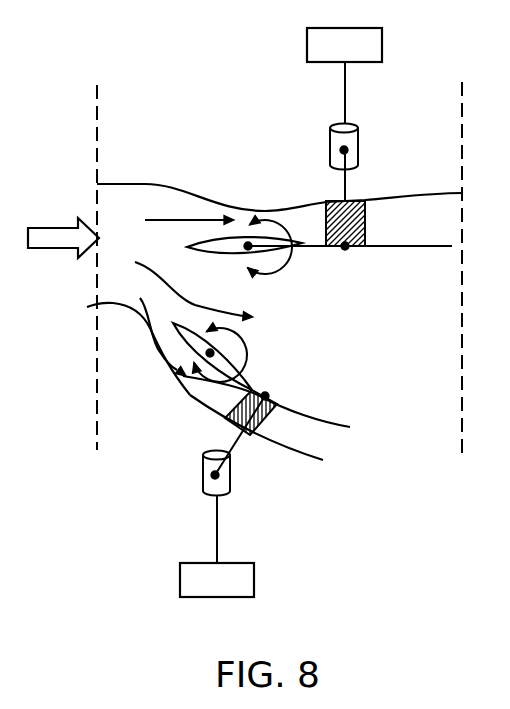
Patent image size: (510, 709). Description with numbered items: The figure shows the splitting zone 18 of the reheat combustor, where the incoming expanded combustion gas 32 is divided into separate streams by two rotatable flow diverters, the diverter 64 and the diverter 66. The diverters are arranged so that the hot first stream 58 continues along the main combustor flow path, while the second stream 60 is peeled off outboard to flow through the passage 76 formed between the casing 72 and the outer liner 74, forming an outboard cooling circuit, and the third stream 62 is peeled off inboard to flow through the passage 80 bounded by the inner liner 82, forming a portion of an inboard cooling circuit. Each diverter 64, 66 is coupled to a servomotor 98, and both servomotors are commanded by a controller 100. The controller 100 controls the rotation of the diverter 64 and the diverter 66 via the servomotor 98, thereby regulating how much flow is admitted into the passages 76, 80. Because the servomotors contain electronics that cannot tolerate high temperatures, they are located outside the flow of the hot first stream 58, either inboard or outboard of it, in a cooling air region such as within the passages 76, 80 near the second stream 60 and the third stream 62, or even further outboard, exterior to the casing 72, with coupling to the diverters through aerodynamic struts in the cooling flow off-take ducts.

The splitting zone 18 is at (134, 58).
The expanded combustion gas 32 is at (47, 226).
The first stream 58 is at (212, 303).
The second stream 60 is at (163, 220).
The third stream 62 is at (152, 308).
The diverter 64 is at (217, 237).
The diverter 66 is at (178, 339).
The casing 72 is at (426, 188).
The outer liner 74 is at (430, 248).
The passage 76 is at (282, 222).
The passage 80 is at (200, 398).
The inner liner 82 is at (325, 415).
The servomotor 98 is at (360, 136).
The controller 100 is at (382, 43).